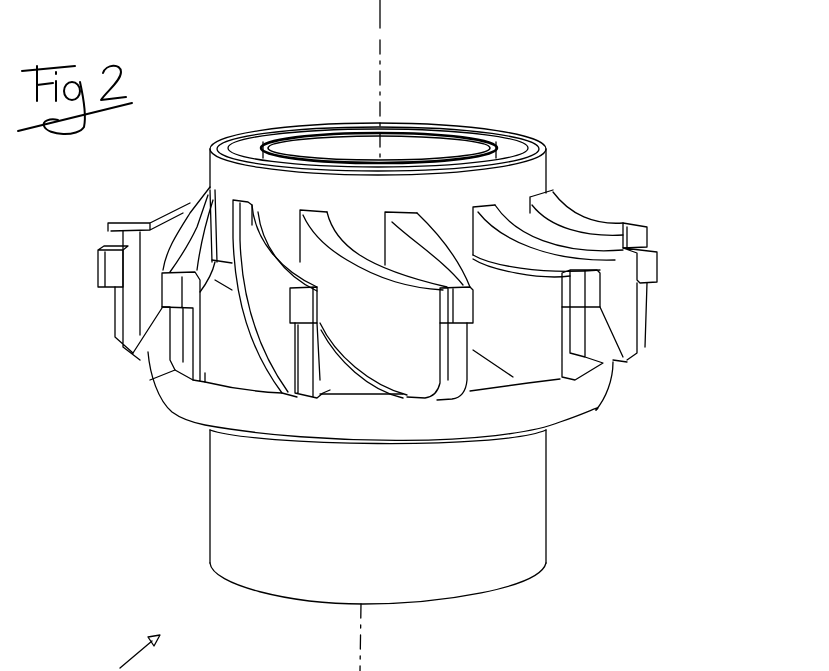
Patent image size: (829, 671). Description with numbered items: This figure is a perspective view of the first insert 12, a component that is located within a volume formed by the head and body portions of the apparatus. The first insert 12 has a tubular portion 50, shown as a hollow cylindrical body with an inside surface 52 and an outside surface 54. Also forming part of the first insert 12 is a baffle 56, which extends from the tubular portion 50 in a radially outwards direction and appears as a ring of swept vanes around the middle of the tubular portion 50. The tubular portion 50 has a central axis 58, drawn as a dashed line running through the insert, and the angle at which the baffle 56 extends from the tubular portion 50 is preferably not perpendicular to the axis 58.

The first insert 12 is at (588, 670).
The tubular portion 50 is at (230, 530).
The inside surface 52 is at (347, 141).
The outside surface 54 is at (533, 488).
The baffle 56 is at (167, 343).
The axis 58 is at (382, 32).